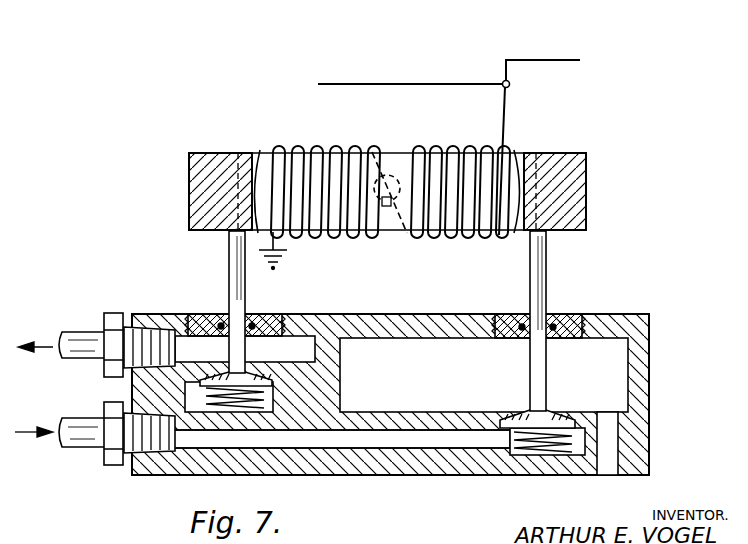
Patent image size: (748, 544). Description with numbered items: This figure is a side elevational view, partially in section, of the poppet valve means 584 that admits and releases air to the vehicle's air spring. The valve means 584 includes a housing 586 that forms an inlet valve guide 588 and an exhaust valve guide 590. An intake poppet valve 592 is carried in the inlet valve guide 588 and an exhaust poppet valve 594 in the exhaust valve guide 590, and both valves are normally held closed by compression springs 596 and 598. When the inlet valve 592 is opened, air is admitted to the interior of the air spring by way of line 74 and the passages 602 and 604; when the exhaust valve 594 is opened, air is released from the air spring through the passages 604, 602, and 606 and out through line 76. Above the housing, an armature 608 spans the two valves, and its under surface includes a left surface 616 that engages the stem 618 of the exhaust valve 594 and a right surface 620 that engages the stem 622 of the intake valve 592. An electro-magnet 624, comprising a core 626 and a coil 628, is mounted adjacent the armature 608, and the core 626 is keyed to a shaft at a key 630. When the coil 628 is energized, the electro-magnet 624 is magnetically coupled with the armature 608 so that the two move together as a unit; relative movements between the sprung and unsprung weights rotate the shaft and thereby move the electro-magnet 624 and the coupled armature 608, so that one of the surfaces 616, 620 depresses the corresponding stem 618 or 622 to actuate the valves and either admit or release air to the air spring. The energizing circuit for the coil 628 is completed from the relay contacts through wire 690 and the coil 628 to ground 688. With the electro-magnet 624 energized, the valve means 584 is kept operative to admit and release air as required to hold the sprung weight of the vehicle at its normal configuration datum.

The line 74 is at (80, 428).
The line 76 is at (78, 340).
The valve means 584 is at (650, 392).
The housing 586 is at (628, 318).
The inlet valve guide 588 is at (573, 314).
The exhaust valve guide 590 is at (270, 313).
The intake poppet valve 592 is at (520, 414).
The exhaust poppet valve 594 is at (274, 398).
The compression spring 596 is at (271, 412).
The compression spring 598 is at (566, 457).
The passage 602 is at (598, 378).
The passage 604 is at (608, 440).
The passage 606 is at (300, 354).
The armature 608 is at (584, 176).
The left surface 616 is at (192, 232).
The stem 618 is at (231, 254).
The right surface 620 is at (560, 233).
The stem 622 is at (531, 282).
The electro-magnet 624 is at (502, 171).
The core 626 is at (495, 170).
The coil 628 is at (448, 160).
The key 630 is at (366, 150).
The ground 688 is at (284, 249).
The wire 690 is at (440, 84).